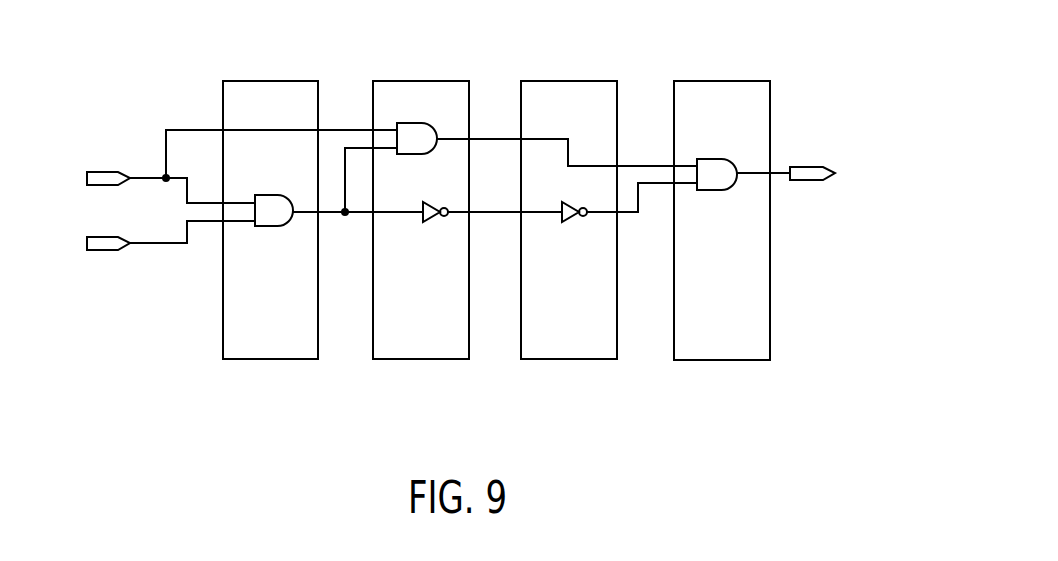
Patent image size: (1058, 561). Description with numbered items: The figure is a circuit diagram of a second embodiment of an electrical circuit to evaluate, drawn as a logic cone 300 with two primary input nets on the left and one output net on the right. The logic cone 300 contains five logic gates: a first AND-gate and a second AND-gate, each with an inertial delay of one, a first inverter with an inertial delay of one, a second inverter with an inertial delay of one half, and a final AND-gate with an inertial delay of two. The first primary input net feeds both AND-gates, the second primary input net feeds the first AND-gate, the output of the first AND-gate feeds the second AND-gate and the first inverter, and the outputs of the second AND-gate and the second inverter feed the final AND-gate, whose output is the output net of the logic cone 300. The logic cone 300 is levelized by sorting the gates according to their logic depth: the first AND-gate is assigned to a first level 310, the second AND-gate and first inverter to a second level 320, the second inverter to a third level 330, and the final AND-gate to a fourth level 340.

The logic cone 300 is at (798, 84).
The first level 310 is at (257, 90).
The second level 320 is at (390, 88).
The third level 330 is at (575, 86).
The fourth level 340 is at (711, 88).